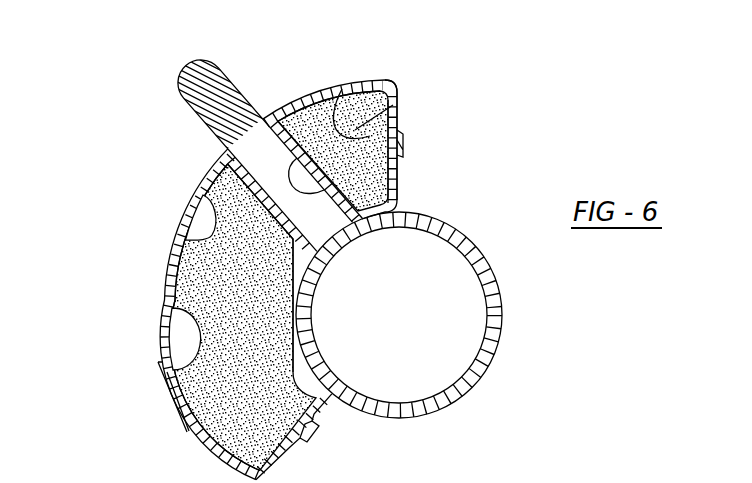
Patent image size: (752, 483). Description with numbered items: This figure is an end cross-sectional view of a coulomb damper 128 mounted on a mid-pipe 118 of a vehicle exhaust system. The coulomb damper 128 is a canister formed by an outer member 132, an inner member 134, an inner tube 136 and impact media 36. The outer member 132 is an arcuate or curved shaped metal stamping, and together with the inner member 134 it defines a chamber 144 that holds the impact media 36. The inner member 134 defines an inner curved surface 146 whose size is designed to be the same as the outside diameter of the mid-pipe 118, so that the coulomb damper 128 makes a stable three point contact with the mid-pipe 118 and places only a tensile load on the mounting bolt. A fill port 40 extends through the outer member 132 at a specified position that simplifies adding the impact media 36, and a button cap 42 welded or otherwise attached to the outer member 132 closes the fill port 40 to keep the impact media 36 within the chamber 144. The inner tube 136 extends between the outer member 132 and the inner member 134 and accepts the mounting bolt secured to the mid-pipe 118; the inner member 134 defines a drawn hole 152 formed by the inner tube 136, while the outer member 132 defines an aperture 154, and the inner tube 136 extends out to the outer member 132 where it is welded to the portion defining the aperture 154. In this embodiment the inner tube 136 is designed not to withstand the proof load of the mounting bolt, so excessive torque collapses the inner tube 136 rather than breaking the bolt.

The coulomb damper 128 is at (102, 220).
The outer member 132 is at (304, 88).
The inner tube 136 is at (342, 89).
The impact media 36 is at (396, 98).
The drawn hole 152 is at (325, 190).
The aperture 154 is at (262, 118).
The chamber 144 is at (203, 206).
The fill port 40 is at (172, 313).
The inner curved surface 146 is at (305, 313).
The mid-pipe 118 is at (499, 295).
The button cap 42 is at (178, 433).
The inner member 134 is at (318, 413).